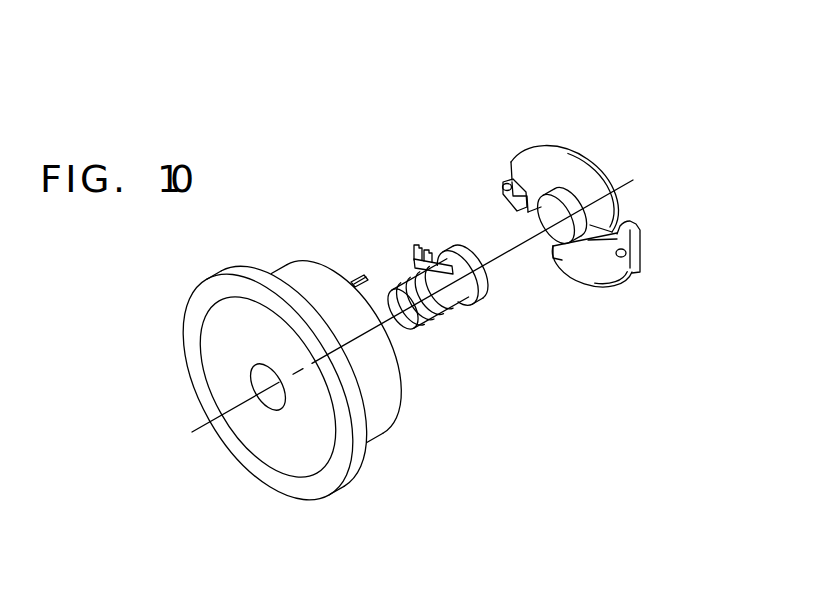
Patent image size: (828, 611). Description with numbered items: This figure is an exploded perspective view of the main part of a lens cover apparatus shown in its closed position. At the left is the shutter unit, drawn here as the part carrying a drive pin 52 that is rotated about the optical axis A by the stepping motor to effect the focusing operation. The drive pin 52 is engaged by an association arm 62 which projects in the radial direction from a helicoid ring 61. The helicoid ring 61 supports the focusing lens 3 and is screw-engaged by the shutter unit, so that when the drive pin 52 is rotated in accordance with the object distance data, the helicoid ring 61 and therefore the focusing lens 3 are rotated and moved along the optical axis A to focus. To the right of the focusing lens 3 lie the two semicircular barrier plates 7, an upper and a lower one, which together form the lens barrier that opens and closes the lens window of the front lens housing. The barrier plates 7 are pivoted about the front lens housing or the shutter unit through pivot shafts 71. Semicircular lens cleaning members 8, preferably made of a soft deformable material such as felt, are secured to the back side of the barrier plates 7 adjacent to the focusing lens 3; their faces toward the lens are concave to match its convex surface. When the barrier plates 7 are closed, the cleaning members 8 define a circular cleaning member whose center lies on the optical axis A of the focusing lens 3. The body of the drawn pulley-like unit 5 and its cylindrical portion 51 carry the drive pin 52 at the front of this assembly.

The pulley 5 is at (355, 467).
The pulley body 51 is at (385, 424).
The drive pin 52 is at (357, 278).
The focusing lens 3 is at (442, 299).
The helicoid ring 61 is at (430, 313).
The association arm 62 is at (413, 259).
The barrier plates 7 is at (544, 242).
The pivot shafts 71 is at (507, 187).
The lens cleaning members 8 is at (516, 212).
The optical axis A is at (500, 258).